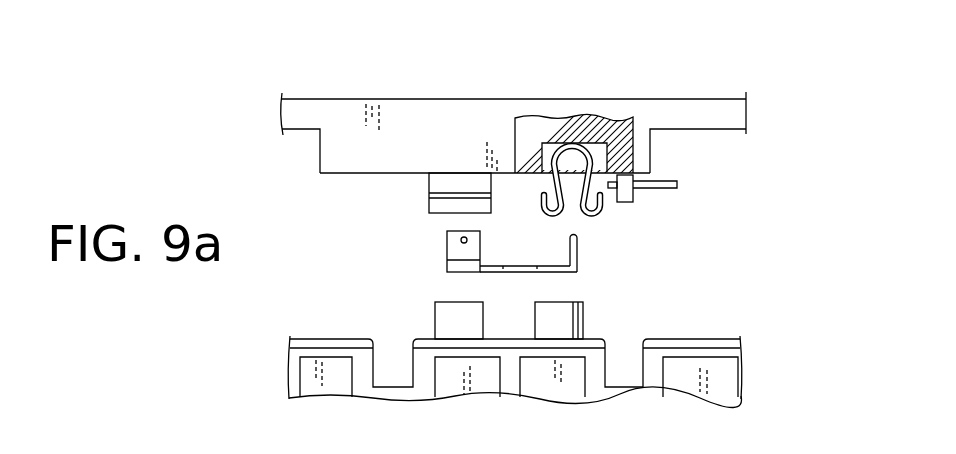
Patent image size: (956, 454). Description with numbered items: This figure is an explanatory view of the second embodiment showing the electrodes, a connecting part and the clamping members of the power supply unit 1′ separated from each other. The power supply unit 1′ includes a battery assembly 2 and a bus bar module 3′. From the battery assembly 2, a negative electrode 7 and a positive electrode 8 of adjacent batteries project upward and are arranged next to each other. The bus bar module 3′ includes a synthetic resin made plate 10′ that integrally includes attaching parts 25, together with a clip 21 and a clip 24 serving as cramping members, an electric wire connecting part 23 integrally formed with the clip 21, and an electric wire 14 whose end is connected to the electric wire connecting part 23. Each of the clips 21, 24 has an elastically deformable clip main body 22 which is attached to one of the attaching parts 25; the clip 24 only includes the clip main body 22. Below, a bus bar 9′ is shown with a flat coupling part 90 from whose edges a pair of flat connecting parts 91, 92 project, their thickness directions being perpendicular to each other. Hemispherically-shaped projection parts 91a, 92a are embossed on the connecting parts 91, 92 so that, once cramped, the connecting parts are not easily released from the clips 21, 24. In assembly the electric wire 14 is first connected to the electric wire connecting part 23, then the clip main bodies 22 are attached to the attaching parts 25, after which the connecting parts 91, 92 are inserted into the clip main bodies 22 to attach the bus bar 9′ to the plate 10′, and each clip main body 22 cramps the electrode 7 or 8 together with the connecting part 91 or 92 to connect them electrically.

The power supply unit 1′ is at (805, 41).
The battery assembly 2 is at (689, 335).
The bus bar module 3′ is at (706, 96).
The electrode 7 is at (433, 313).
The electrode 8 is at (583, 318).
The bus bar 9′ is at (494, 262).
The plate 10′ is at (588, 108).
The electric wire 14 is at (660, 183).
The clip 21 is at (602, 142).
The clip main body 22 is at (458, 182).
The electric wire connecting part 23 is at (634, 200).
The clip 24 is at (428, 179).
The attaching part 25 is at (545, 143).
The coupling part 90 is at (518, 265).
The connecting part 91 is at (578, 250).
The projection part 91a is at (576, 230).
The connecting part 92 is at (447, 258).
The projection part 92a is at (461, 240).